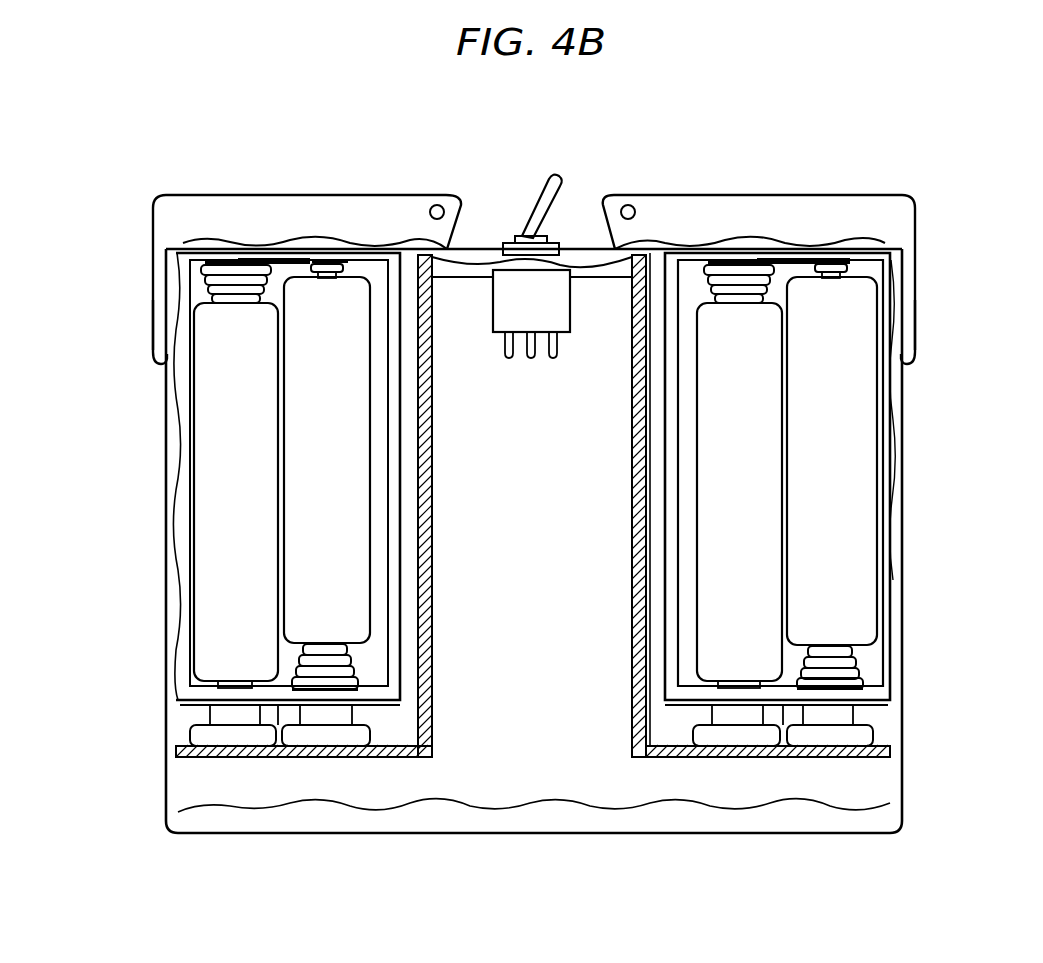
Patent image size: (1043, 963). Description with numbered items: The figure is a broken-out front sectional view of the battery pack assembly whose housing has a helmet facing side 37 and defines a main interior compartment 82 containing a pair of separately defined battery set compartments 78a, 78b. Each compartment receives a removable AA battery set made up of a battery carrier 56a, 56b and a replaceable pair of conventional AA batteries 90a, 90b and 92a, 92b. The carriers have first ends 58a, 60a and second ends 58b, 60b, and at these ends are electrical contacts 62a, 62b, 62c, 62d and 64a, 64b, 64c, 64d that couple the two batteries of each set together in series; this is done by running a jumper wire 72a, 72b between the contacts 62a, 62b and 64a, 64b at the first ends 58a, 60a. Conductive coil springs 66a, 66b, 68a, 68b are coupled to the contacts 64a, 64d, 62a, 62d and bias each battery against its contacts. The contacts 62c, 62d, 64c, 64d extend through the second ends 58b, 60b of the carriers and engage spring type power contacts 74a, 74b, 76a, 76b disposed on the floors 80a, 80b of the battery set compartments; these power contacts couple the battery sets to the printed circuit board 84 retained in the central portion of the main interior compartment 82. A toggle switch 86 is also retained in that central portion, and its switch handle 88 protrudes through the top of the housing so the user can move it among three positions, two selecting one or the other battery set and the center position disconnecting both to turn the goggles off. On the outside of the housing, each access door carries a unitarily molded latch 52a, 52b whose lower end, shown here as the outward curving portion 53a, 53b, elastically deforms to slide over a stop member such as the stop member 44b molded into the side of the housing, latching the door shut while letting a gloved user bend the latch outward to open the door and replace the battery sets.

The helmet facing side 37 is at (168, 553).
The stop member 44b is at (153, 268).
The latch 52a is at (915, 322).
The latch 52b is at (155, 330).
The lid hook 53a is at (915, 364).
The lid hook 53b is at (158, 364).
The battery carrier 56a is at (886, 693).
The battery carrier 56b is at (434, 700).
The first end of battery carrier 58a is at (778, 258).
The second end of battery carrier 58b is at (852, 725).
The first end of battery carrier 60a is at (250, 258).
The second end of battery carrier 60b is at (206, 737).
The electrical contact 62a is at (218, 262).
The electrical contact 62b is at (345, 259).
The electrical contact 62c is at (290, 689).
The electrical contact 62d is at (262, 676).
The electrical contact 64a is at (735, 260).
The electrical contact 64b is at (850, 262).
The electrical contact 64c is at (736, 682).
The electrical contact 64d is at (870, 662).
The coil spring 66a is at (715, 265).
The coil spring 66b is at (862, 664).
The coil spring 68a is at (210, 285).
The coil spring 68b is at (300, 665).
The jumper wire 72a is at (326, 264).
The jumper wire 72b is at (832, 264).
The power contact 74a is at (735, 736).
The power contact 74b is at (850, 736).
The power contact 76a is at (205, 736).
The power contact 76b is at (320, 736).
The battery set compartment 78a is at (395, 757).
The battery set compartment 78b is at (668, 757).
The floor of battery set compartment 80a is at (225, 758).
The floor of battery set compartment 80b is at (810, 758).
The main interior compartment 82 is at (653, 790).
The printed circuit board 84 is at (553, 768).
The toggle switch 86 is at (571, 300).
The switch handle 88 is at (548, 186).
The AA battery 90a is at (225, 473).
The AA battery 90b is at (325, 528).
The AA battery 92a is at (745, 451).
The AA battery 92b is at (835, 512).